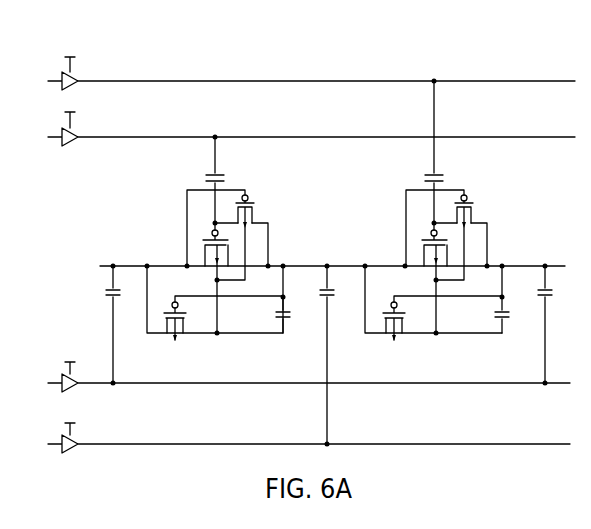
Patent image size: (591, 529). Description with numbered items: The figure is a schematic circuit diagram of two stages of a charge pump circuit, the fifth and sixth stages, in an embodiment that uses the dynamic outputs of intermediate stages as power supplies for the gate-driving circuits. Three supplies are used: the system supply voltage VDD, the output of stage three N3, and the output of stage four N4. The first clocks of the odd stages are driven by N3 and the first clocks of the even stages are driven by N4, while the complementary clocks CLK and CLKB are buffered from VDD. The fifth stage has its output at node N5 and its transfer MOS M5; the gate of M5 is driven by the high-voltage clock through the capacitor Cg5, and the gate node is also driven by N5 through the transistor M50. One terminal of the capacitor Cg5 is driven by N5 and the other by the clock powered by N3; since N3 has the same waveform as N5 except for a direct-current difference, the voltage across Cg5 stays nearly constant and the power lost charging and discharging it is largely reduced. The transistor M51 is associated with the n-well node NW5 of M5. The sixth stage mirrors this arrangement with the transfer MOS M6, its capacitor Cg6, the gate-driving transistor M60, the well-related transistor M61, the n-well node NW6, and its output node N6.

The output of stage 4 N4 is at (92, 153).
The output of stage 3 N3 is at (72, 113).
The output of stage 5 N5 is at (326, 346).
The output of stage 6 N6 is at (544, 316).
The CLKB clock CLKB is at (309, 388).
The CLK clock CLK is at (309, 449).
The system supply voltage VDD is at (70, 392).
The capacitor Cg5 is at (227, 180).
The capacitor Cg6 is at (446, 152).
The transfer MOS M5 is at (212, 278).
The transfer MOS M6 is at (431, 278).
The gate-driving transistor M50 is at (247, 237).
The gate-driving transistor M60 is at (466, 237).
The well-biasing transistor M51 is at (223, 328).
The well-biasing transistor M61 is at (442, 328).
The n-well node NW5 is at (248, 328).
The n-well node NW6 is at (467, 311).